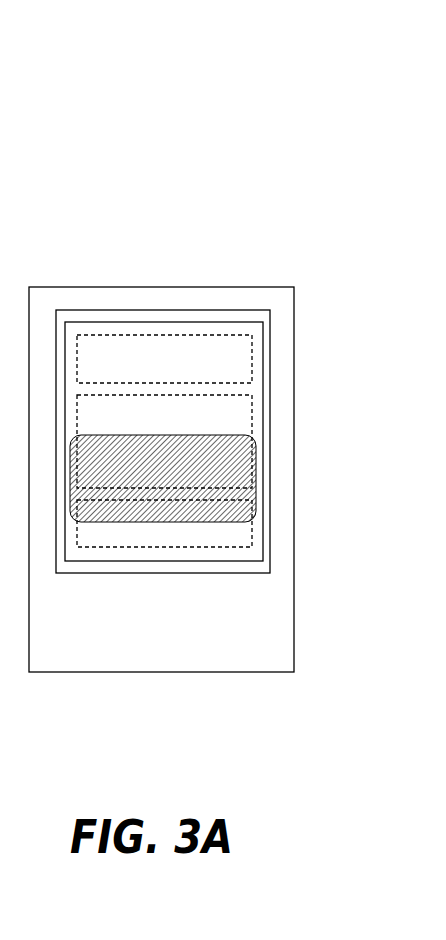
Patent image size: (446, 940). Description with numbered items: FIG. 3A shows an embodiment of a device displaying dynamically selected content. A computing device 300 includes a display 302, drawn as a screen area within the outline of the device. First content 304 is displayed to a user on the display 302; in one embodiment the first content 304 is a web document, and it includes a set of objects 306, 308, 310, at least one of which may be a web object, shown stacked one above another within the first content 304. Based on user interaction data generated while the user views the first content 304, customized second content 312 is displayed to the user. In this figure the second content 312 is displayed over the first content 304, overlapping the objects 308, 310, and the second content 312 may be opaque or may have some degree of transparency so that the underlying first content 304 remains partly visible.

The computing device 300 is at (263, 95).
The display 302 is at (227, 308).
The first content 304 is at (200, 322).
The object 306 is at (257, 350).
The object 308 is at (258, 420).
The object 310 is at (255, 533).
The second content 312 is at (141, 522).